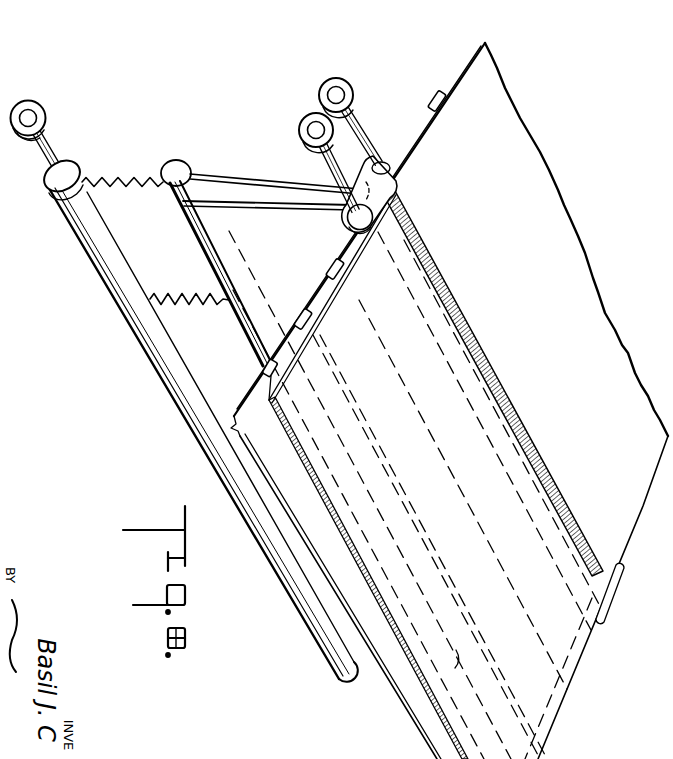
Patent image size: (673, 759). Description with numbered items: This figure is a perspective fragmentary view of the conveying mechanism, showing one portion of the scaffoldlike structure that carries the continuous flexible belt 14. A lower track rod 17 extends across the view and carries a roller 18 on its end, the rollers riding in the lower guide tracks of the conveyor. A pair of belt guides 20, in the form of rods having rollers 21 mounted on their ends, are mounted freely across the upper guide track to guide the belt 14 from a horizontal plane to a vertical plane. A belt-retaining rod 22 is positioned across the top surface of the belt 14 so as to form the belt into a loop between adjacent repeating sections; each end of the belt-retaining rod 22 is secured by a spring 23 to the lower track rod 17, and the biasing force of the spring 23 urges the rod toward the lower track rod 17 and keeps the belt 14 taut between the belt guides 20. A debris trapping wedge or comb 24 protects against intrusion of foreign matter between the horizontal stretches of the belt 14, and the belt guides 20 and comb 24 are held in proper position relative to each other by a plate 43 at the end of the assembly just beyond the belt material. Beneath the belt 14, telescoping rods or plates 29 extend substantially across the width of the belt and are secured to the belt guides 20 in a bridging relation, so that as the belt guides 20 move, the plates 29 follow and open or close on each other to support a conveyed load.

The flexible belt 14 is at (471, 96).
The lower track rod 17 is at (117, 287).
The roller 18 is at (20, 134).
The belt guide 20 is at (386, 158).
The roller 21 is at (298, 140).
The belt-retaining rod 22 is at (175, 160).
The spring 23 is at (134, 194).
The debris trapping wedge or comb 24 is at (528, 440).
The telescoping rods or plates 29 is at (429, 102).
The plate 43 is at (608, 596).